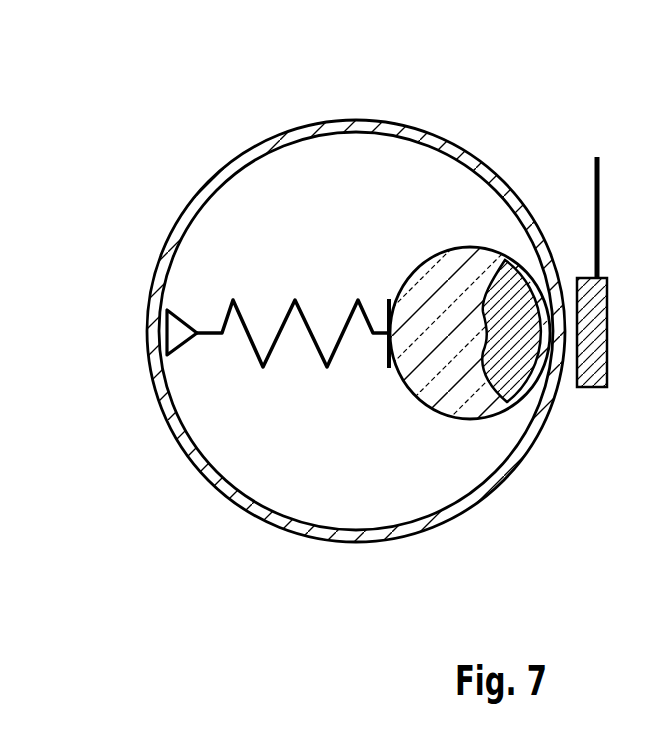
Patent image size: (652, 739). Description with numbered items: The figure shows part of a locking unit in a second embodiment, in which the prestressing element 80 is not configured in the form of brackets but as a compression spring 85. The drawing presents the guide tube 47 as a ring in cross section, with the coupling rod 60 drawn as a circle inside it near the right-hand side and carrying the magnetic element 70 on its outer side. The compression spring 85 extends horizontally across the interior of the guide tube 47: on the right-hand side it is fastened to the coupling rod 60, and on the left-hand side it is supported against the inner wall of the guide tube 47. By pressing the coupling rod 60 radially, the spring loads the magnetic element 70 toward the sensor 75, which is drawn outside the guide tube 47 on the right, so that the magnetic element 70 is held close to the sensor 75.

The guide tube 47 is at (312, 127).
The coupling rod 60 is at (472, 241).
The magnetic element 70 is at (513, 278).
The sensor 75 is at (596, 389).
The prestressing element 80 is at (258, 357).
The compression spring 85 is at (323, 362).